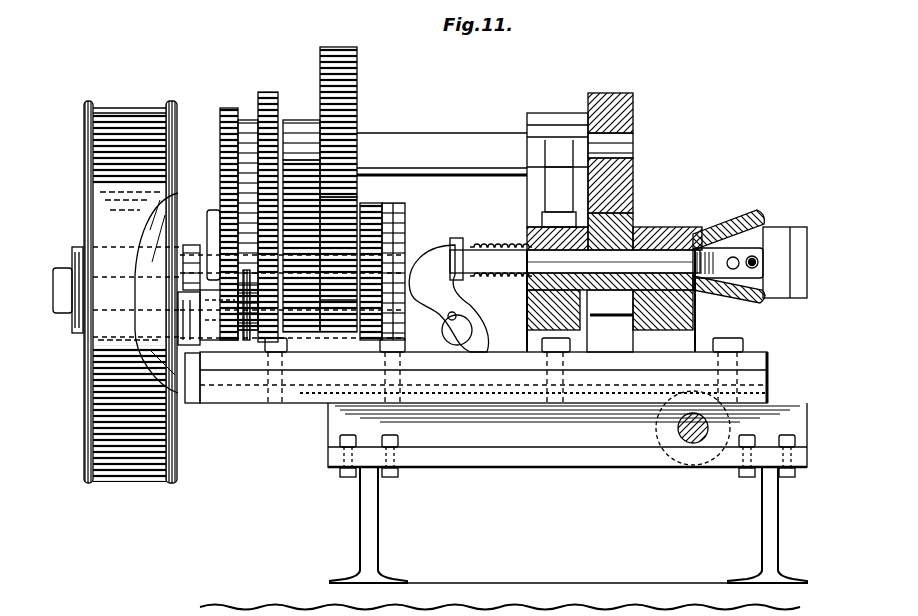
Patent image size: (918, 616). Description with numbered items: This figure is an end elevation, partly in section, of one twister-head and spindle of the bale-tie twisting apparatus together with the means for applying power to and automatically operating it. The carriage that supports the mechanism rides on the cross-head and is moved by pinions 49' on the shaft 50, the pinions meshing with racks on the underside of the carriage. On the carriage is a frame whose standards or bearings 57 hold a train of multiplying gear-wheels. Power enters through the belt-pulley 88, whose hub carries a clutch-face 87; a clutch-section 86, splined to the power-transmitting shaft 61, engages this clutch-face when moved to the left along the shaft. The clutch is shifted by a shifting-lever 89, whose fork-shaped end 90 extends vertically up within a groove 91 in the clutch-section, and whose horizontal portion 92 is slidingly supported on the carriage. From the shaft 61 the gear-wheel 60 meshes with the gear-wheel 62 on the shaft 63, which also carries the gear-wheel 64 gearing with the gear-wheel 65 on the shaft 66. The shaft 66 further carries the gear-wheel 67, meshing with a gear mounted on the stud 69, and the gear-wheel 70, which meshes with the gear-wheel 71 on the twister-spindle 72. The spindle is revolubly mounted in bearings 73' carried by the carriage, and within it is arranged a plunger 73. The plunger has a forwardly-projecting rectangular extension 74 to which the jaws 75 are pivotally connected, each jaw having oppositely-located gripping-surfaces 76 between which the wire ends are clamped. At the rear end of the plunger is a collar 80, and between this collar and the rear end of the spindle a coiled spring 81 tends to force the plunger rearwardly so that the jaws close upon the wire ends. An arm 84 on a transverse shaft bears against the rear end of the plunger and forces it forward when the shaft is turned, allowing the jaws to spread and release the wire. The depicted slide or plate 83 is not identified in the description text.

The belt-pulley 88 is at (88, 395).
The groove 91 is at (167, 270).
The clutch-face 87 is at (163, 253).
The fork-shaped end 90 is at (177, 338).
The clutch-section 86 is at (200, 245).
The shifting-lever 89 is at (197, 347).
The stud 69 is at (223, 207).
The gear-wheel 67 is at (230, 108).
The shaft 63 is at (272, 228).
The power-transmitting shaft 61 is at (250, 325).
The standards or bearings 57 is at (278, 92).
The gear-wheel 62 is at (310, 160).
The gear-wheel 65 is at (357, 88).
The gear-wheel 64 is at (360, 196).
The twister-spindle 72 is at (680, 227).
The gear-wheel 60 is at (313, 330).
The shaft 66 is at (430, 133).
The gear-wheel 70 is at (633, 115).
The gear-wheel 71 is at (633, 217).
The bearings 73' is at (608, 271).
The plunger 73 is at (589, 286).
The coiled spring 81 is at (503, 281).
The collar 80 is at (462, 244).
The rectangular extension 74 is at (752, 215).
The jaws 75 is at (775, 287).
The gripping-surfaces 76 is at (800, 253).
The arms or levers 84 is at (453, 322).
The slide plate 83 is at (467, 353).
The horizontal portion 92 is at (233, 350).
The pinions 49' is at (655, 428).
The shaft 50 is at (687, 468).